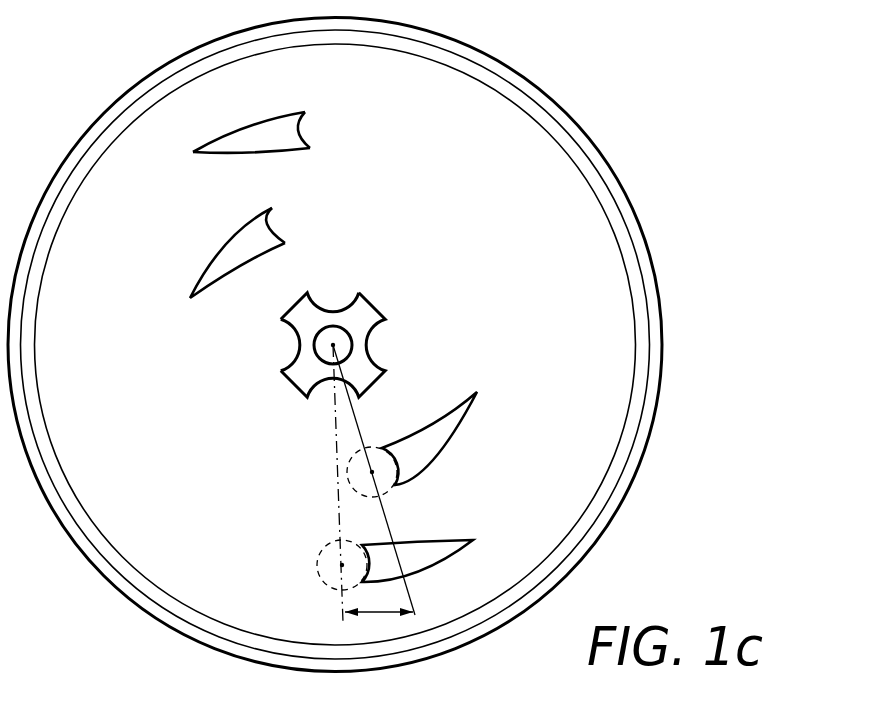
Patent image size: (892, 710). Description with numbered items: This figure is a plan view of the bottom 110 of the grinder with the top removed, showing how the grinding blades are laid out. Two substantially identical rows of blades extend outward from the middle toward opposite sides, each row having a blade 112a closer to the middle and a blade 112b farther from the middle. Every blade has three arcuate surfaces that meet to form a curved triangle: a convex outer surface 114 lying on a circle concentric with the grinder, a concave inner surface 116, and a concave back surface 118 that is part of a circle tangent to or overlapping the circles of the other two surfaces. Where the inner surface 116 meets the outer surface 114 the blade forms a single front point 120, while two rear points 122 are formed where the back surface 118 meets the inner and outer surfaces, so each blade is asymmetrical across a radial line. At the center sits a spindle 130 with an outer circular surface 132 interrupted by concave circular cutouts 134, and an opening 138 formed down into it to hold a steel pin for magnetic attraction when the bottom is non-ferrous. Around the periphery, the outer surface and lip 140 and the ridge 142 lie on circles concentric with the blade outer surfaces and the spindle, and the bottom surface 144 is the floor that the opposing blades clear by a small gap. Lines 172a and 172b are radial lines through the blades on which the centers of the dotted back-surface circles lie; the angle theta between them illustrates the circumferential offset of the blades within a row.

The bottom 110 is at (672, 105).
The blade closer to the middle 112a is at (232, 250).
The blade farther from the middle 112b is at (270, 127).
The outer surface 114 is at (260, 123).
The inner surface 116 is at (252, 146).
The back surface 118 is at (303, 127).
The front point 120 is at (190, 298).
The rear points 122 is at (286, 242).
The spindle 130 is at (372, 300).
The outer circular surface 132 is at (385, 312).
The concave circular cutouts 134 is at (297, 343).
The opening 138 is at (342, 345).
The outer surface and lip 140 is at (650, 247).
The ridge 142 is at (648, 303).
The bottom surface 144 is at (188, 521).
The radial line 172a is at (367, 432).
The radial line 172b is at (338, 455).